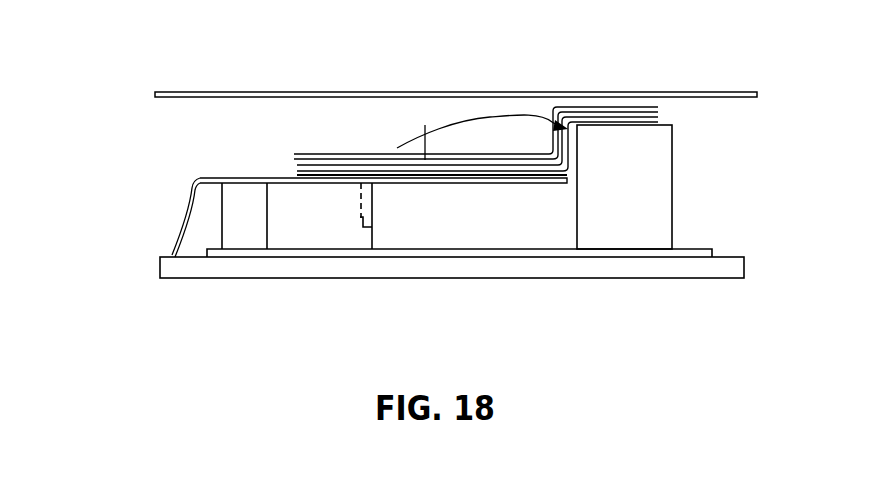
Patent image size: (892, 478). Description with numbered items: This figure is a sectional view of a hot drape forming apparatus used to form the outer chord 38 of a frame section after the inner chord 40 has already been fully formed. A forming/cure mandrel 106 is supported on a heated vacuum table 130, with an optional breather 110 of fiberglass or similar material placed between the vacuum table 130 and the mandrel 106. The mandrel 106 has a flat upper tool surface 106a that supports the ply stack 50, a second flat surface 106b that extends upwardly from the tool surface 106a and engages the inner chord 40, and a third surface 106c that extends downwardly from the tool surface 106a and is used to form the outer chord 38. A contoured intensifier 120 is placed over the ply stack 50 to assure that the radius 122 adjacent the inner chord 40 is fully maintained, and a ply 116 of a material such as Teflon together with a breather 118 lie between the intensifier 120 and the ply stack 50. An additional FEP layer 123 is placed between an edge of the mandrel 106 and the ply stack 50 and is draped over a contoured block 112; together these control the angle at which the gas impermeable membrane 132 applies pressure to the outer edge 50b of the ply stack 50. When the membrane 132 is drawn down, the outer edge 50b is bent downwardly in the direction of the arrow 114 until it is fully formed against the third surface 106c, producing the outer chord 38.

The outer chord 38 is at (356, 217).
The inner chord 40 is at (577, 153).
The ply stack 50 is at (346, 209).
The outer edge of the ply stack 50b is at (300, 172).
The forming/cure mandrel 106 is at (534, 223).
The flat upper tool surface 106a is at (397, 147).
The second flat surface 106b is at (552, 117).
The third surface 106c is at (348, 236).
The breather 110 is at (480, 252).
The contoured block 112 is at (243, 227).
The arrow 114 is at (322, 195).
The ply 116 is at (347, 156).
The breather 118 is at (379, 165).
The contoured intensifier 120 is at (490, 117).
The radius 122 is at (576, 175).
The FEP layer 123 is at (250, 178).
The vacuum table 130 is at (408, 262).
The membrane 132 is at (613, 95).